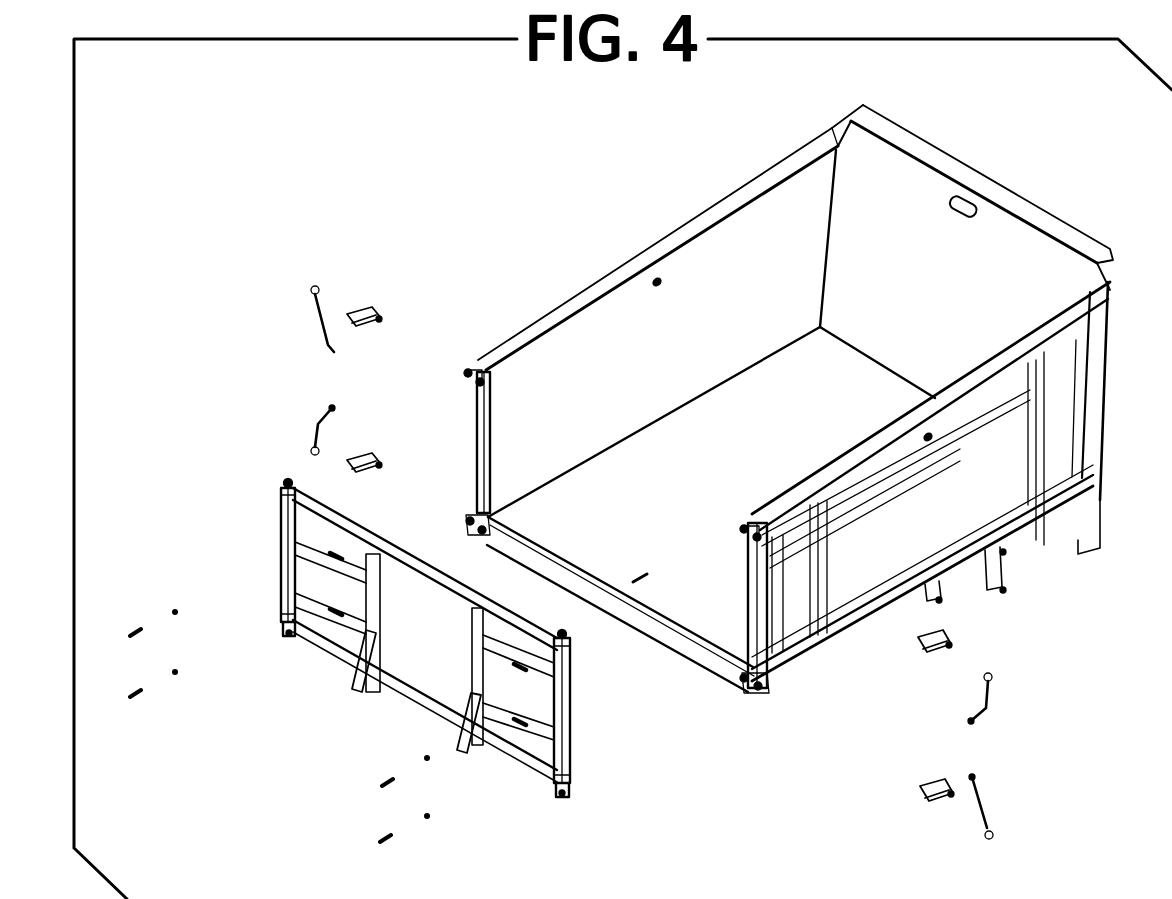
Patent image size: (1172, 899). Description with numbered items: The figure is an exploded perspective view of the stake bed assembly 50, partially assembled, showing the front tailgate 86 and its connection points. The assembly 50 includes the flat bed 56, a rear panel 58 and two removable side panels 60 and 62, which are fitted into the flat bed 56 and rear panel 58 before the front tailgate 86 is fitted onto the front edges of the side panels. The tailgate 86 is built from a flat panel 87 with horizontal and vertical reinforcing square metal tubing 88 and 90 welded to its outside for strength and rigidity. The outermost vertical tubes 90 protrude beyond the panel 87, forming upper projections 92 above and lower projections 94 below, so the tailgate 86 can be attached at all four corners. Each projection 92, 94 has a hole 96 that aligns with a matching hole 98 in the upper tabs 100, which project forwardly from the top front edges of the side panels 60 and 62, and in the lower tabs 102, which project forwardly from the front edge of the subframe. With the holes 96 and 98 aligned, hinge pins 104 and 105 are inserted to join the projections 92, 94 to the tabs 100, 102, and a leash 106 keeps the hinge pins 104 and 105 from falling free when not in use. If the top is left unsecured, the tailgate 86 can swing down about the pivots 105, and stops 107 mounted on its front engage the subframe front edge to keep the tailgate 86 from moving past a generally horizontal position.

The stake bed assembly 50 is at (666, 190).
The flat bed 56 is at (1040, 583).
The rear panel 58 is at (911, 286).
The side panel 60 is at (703, 337).
The side panel 62 is at (913, 524).
The front tailgate 86 is at (468, 778).
The flat panel 87 is at (410, 673).
The horizontal reinforcing square metal tubing 88 is at (315, 566).
The vertical reinforcing square metal tubing 90 is at (280, 515).
The upper projection 92 is at (284, 486).
The lower projection 94 is at (284, 631).
The hole 96 is at (299, 486).
The hole 98 is at (466, 522).
The upper tab 100 is at (470, 370).
The lower tab 102 is at (468, 518).
The hinge pin 104 is at (376, 312).
The hinge pin 105 is at (373, 459).
The leash 106 is at (330, 405).
The stop 107 is at (356, 672).